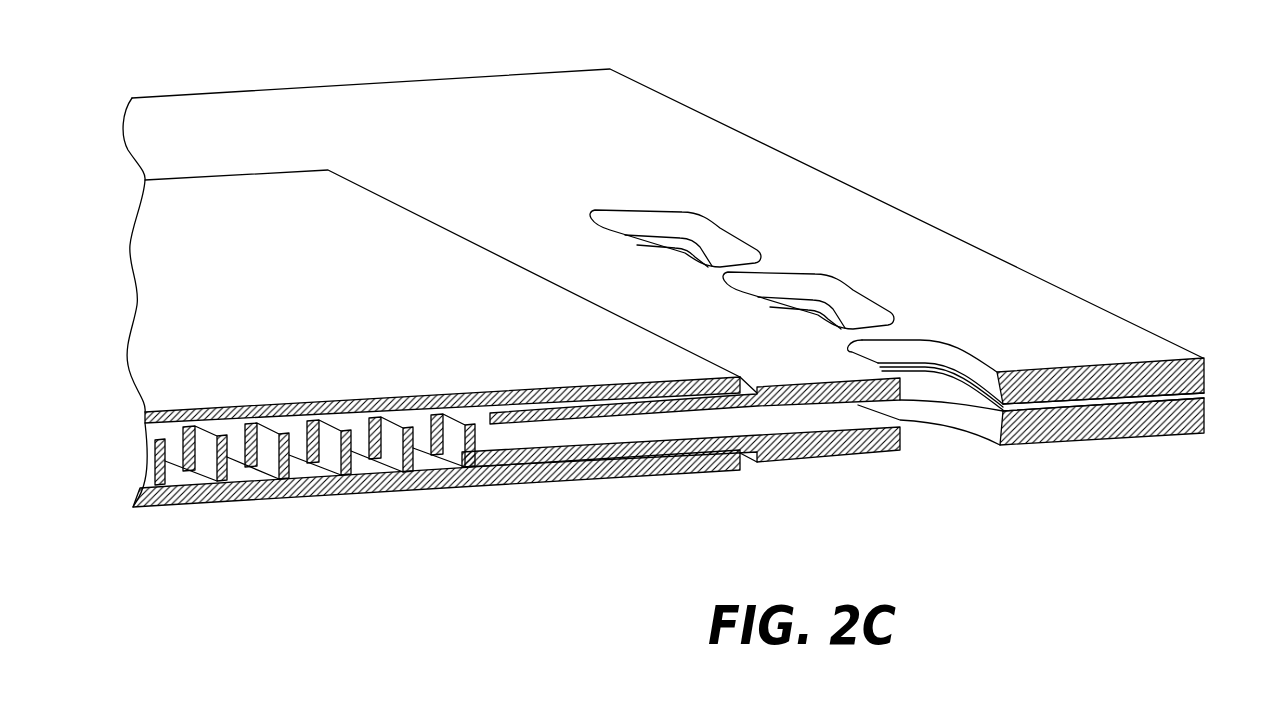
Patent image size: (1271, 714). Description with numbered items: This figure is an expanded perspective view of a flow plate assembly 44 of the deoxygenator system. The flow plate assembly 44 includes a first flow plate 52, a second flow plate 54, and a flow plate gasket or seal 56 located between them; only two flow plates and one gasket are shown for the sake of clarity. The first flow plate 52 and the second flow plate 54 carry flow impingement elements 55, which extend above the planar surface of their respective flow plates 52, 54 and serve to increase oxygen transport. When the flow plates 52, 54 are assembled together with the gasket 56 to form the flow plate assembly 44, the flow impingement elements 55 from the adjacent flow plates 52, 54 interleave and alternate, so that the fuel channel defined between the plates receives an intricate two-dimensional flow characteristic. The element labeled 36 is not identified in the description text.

The flow plate assembly 44 is at (798, 83).
The first flow plate 52 is at (976, 268).
The second flow plate 54 is at (1107, 427).
The flow plate gasket 56 is at (1204, 395).
The heat sink rails 36 is at (143, 423).
The flow impingement elements 55 is at (350, 452).